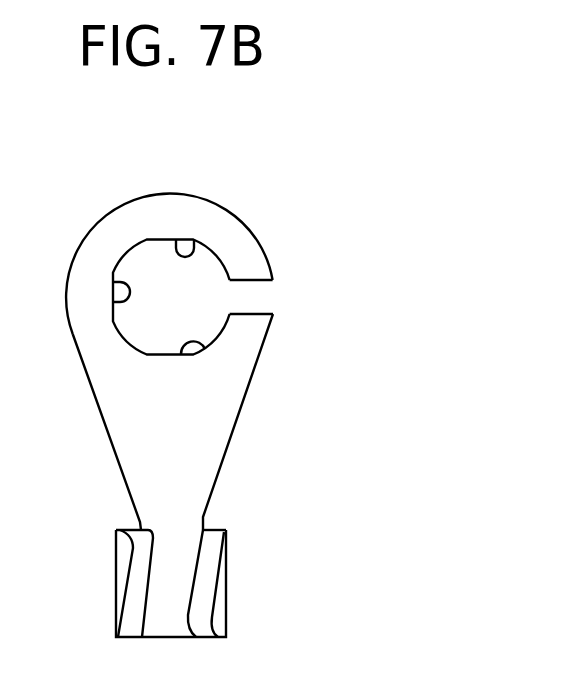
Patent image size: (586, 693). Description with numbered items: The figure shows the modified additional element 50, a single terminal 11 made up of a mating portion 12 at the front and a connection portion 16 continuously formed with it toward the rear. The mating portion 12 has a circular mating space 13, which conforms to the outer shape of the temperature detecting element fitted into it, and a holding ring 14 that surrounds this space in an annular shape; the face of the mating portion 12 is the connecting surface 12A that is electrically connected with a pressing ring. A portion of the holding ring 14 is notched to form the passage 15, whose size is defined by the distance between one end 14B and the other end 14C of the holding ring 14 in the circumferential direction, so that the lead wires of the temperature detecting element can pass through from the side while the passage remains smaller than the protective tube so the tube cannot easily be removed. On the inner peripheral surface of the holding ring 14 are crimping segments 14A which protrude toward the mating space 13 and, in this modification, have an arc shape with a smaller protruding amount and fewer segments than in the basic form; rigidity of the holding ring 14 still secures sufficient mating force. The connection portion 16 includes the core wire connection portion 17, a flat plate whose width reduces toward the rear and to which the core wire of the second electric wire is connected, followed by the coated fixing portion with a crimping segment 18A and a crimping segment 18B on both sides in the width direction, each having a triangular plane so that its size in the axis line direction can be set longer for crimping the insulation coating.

The additional element 50 is at (312, 146).
The terminal 11 is at (283, 252).
The mating portion 12 is at (108, 208).
The connecting surface 12A is at (155, 208).
The mating space 13 is at (184, 306).
The holding ring 14 is at (78, 245).
The crimping segment 14A is at (193, 237).
The one end of the holding ring 14B is at (267, 292).
The other end of the holding ring 14C is at (327, 338).
The passage 15 is at (250, 311).
The connection portion 16 is at (112, 450).
The core wire connection portion 17 is at (120, 409).
The crimping segment 18A is at (215, 596).
The crimping segment 18B is at (128, 571).